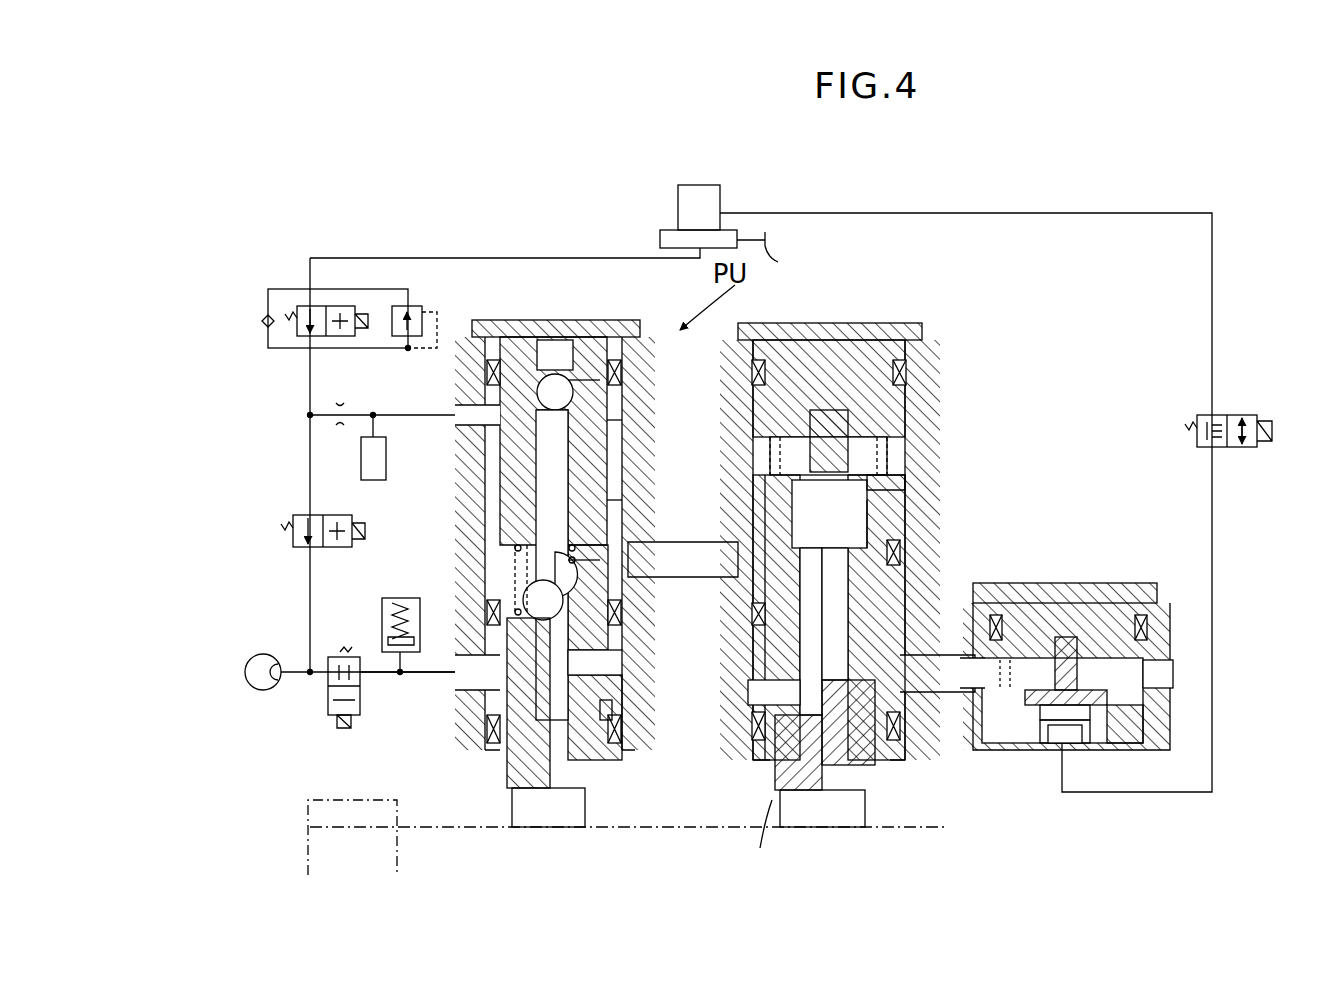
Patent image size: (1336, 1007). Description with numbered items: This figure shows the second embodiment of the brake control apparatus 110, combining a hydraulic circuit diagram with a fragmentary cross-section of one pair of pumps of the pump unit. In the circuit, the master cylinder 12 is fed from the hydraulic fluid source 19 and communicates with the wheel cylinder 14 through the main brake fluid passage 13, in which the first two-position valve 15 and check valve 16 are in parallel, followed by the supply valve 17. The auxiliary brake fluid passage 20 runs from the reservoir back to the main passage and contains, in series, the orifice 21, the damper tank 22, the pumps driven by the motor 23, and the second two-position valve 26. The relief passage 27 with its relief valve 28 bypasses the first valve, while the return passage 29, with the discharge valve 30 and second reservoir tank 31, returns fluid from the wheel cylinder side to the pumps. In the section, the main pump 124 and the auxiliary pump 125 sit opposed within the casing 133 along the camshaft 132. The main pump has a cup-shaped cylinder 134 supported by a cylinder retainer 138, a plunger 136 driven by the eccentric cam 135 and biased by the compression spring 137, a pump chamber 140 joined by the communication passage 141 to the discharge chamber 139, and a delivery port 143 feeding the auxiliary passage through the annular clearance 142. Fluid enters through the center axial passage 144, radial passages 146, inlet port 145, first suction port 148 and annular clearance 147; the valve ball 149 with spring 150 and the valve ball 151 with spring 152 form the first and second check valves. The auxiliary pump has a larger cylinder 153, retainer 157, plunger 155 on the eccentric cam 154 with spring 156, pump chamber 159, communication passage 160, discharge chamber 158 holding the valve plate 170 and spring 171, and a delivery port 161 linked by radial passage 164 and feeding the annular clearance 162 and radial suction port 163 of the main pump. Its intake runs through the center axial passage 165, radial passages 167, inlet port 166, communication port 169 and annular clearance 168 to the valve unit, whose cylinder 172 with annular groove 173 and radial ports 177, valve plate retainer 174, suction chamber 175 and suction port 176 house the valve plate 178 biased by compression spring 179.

The brake control apparatus 110 is at (443, 170).
The master cylinder 12 is at (672, 238).
The main brake fluid passage 13 is at (512, 258).
The wheel cylinder 14 is at (258, 655).
The first two-position valve 15 is at (297, 305).
The check valve 16 is at (264, 316).
The supply valve 17 is at (292, 520).
The hydraulic fluid source 19 is at (700, 185).
The auxiliary brake fluid passage 20 is at (1044, 213).
The orifice 21 is at (338, 405).
The damper tank 22 is at (361, 468).
The motor 23 is at (306, 815).
The second two-position valve 26 is at (1224, 410).
The brake fluid relief passage 27 is at (378, 289).
The relief valve 28 is at (422, 316).
The brake fluid return passage 29 is at (375, 674).
The discharge valve 30 is at (326, 698).
The second reservoir tank 31 is at (382, 600).
The main pump 124 is at (549, 546).
The auxiliary pump 125 is at (853, 561).
The camshaft 132 is at (672, 838).
The casing 133 is at (1120, 683).
The cylinder 134 is at (460, 455).
The eccentric cam 135 is at (568, 832).
The plunger 136 is at (518, 775).
The compression spring 137 is at (505, 552).
The cylinder retainer 138 is at (507, 335).
The discharge chamber 139 is at (600, 340).
The pump chamber 140 is at (472, 494).
The communication passage 141 is at (580, 462).
The annular clearance 142 is at (605, 432).
The delivery port 143 is at (470, 400).
The center axial passage 144 is at (622, 602).
The inlet port 145 is at (595, 668).
The radial passages 146 is at (470, 720).
The annular clearance 147 is at (630, 700).
The first suction port 148 is at (606, 725).
The valve ball 149 is at (620, 380).
The compression spring 150 is at (550, 340).
The valve ball 151 is at (630, 580).
The compression spring 152 is at (516, 562).
The cylinder 153 is at (890, 505).
The eccentric cam 154 is at (828, 832).
The plunger 155 is at (746, 836).
The compression spring 156 is at (860, 520).
The cylinder retainer 157 is at (791, 340).
The discharge chamber 158 is at (760, 420).
The pump chamber 159 is at (900, 562).
The communication passage 160 is at (862, 532).
The delivery port 161 is at (918, 462).
The annular clearance 162 is at (620, 520).
The radial suction port 163 is at (520, 576).
The radial passage 164 is at (925, 432).
The center axial passage 165 is at (814, 620).
The inlet port 166 is at (760, 735).
The radial passages 167 is at (860, 770).
The annular clearance 168 is at (770, 682).
The communication port 169 is at (770, 686).
The valve plate 170 is at (832, 430).
The compression spring 171 is at (762, 458).
The cylinder 172 is at (1052, 582).
The annular groove 173 is at (1150, 690).
The valve plate retainer 174 is at (1115, 742).
The suction chamber 175 is at (1096, 660).
The suction port 176 is at (1046, 745).
The radial ports 177 is at (1145, 672).
The valve plate 178 is at (1075, 745).
The compression spring 179 is at (1016, 745).